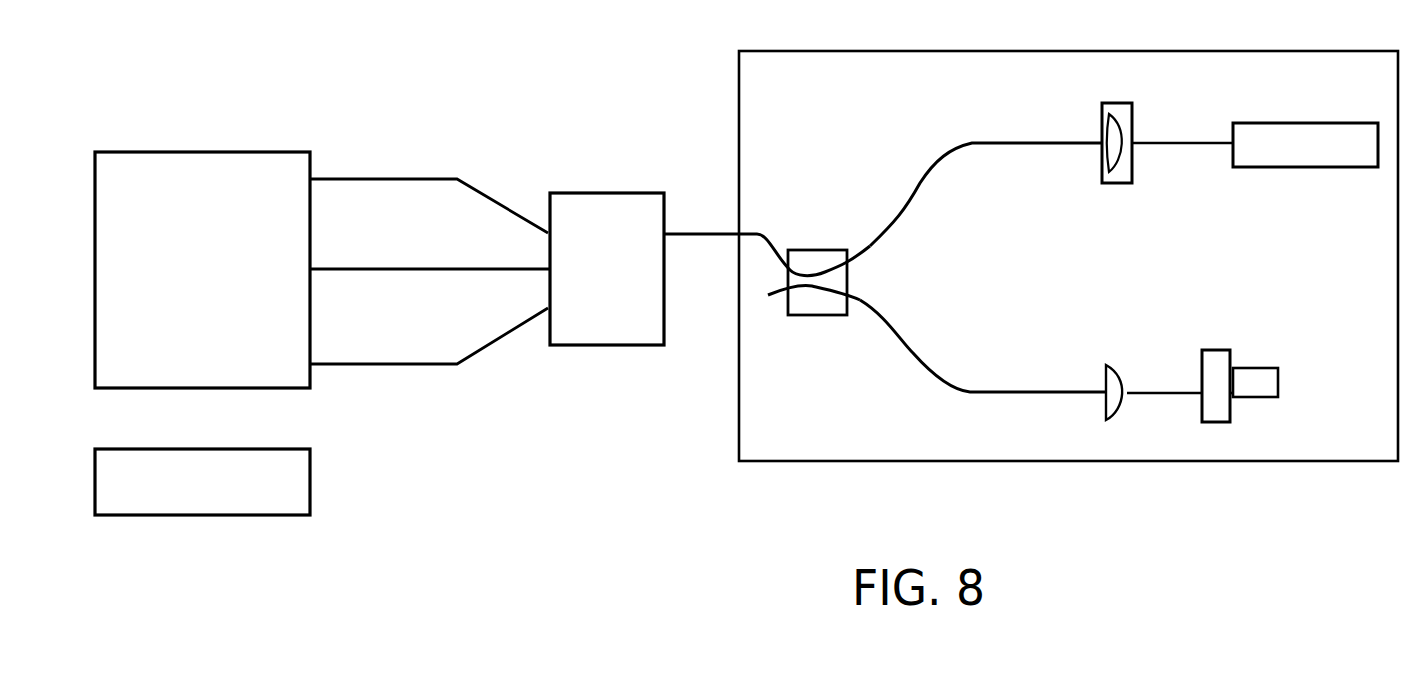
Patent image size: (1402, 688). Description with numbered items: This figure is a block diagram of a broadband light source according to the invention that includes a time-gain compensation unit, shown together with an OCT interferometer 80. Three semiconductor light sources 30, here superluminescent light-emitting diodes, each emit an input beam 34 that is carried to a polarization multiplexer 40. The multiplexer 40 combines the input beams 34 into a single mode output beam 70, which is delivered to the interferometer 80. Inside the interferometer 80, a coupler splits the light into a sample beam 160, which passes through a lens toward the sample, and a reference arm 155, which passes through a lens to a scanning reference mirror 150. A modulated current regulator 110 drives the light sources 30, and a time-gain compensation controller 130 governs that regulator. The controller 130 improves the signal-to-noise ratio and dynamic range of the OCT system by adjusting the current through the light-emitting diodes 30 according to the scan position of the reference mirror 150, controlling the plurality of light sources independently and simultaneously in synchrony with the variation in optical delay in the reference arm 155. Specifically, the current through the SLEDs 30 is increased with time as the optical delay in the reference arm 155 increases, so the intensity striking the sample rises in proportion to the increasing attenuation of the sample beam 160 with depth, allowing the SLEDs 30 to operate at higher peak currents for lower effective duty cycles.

The current regulator 110 is at (137, 150).
The time-gain compensation controller 130 is at (138, 447).
The semiconductor light source 30 is at (382, 140).
The input beam 34 is at (477, 190).
The polarization multiplexer 40 is at (573, 192).
The single mode output beam 70 is at (672, 230).
The OCT interferometer 80 is at (1295, 50).
The sample beam 160 is at (997, 143).
The reference arm 155 is at (997, 392).
The reference mirror 150 is at (1212, 350).